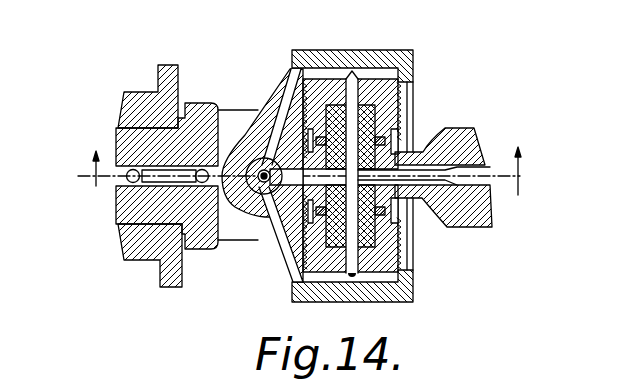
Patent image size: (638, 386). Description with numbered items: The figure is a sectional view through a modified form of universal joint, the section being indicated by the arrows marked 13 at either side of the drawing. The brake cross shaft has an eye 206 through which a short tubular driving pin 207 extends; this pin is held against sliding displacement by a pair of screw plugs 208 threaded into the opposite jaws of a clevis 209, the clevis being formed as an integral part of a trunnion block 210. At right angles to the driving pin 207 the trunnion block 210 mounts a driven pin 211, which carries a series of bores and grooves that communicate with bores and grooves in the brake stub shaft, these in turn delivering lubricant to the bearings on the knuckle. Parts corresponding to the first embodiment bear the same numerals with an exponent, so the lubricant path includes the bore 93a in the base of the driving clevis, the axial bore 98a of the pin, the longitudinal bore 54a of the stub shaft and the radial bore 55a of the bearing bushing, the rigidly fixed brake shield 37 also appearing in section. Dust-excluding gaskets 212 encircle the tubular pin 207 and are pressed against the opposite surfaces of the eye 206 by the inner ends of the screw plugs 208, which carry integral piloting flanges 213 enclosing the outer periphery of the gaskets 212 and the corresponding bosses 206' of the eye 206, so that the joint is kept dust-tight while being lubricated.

The section line indicator 13 is at (318, 160).
The brake shield 37 is at (200, 91).
The longitudinal bore 54a is at (115, 195).
The radial bore 55a is at (115, 176).
The bore 93a is at (172, 310).
The axial bore 98a is at (258, 110).
The eye 206 is at (352, 151).
The bosses 206' is at (472, 189).
The tubular driving pin 207 is at (413, 90).
The screw plugs 208 is at (413, 72).
The clevis 209 is at (263, 69).
The trunnion block 210 is at (236, 170).
The driven pin 211 is at (258, 214).
The dust-excluding gaskets 212 is at (398, 140).
The piloting flanges 213 is at (272, 250).